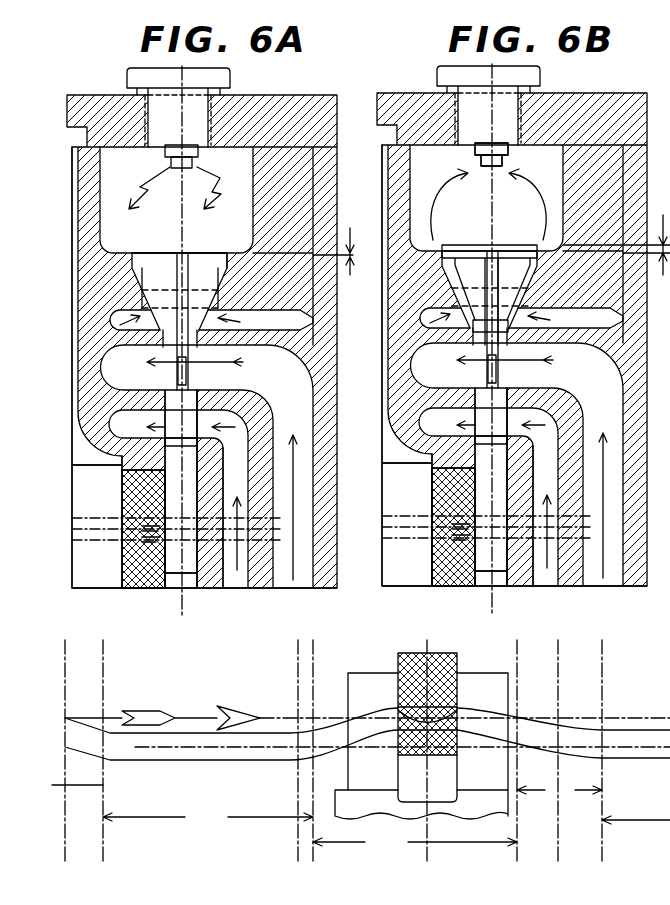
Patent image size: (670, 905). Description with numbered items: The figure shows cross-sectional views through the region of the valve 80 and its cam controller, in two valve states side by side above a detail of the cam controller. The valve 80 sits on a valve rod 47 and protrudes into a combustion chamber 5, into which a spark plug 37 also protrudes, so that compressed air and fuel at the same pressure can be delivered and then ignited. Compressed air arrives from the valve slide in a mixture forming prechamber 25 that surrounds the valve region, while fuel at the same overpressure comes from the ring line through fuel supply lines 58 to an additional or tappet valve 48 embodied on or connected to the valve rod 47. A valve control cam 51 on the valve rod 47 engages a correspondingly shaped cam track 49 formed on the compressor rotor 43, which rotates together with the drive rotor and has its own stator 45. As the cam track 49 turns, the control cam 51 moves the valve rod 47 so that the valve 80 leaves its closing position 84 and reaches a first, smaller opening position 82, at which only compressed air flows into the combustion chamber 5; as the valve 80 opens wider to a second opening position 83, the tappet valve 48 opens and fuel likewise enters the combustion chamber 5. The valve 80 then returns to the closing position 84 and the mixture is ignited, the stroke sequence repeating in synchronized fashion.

In FIG. 6A, the combustion chamber 5 is at (180, 110).
In FIG. 6B, the combustion chamber 5 is at (458, 195).
In FIG. 6A, the mixture forming prechamber 25 is at (125, 428).
In FIG. 6B, the mixture forming prechamber 25 is at (450, 318).
In FIG. 6B, the spark plug 37 is at (490, 120).
In FIG. 6A, the compressor rotor 43 is at (82, 578).
In FIG. 6B, the compressor rotor 43 is at (392, 578).
In FIG. 6A, the stator 45 is at (208, 565).
In FIG. 6B, the stator 45 is at (518, 565).
In FIG. 6A, the valve rod 47 is at (176, 565).
In FIG. 6B, the valve rod 47 is at (486, 565).
In FIG. 6A, the tappet valve 48 is at (191, 370).
In FIG. 6B, the tappet valve 48 is at (500, 368).
In FIG. 6B, the cam track 49 is at (135, 747).
In FIG. 6A, the valve control cam 51 is at (147, 530).
In FIG. 6B, the valve control cam 51 is at (457, 528).
In FIG. 6A, the fuel supply line 58 is at (245, 362).
In FIG. 6B, the fuel supply line 58 is at (440, 380).
In FIG. 6A, the valve 80 is at (167, 277).
In FIG. 6B, the valve 80 is at (490, 280).
In FIG. 6B, the first opening position 82 is at (347, 496).
In FIG. 6B, the second opening position 83 is at (415, 843).
In FIG. 6A, the closing position 84 is at (356, 252).
In FIG. 6B, the closing position 84 is at (208, 819).